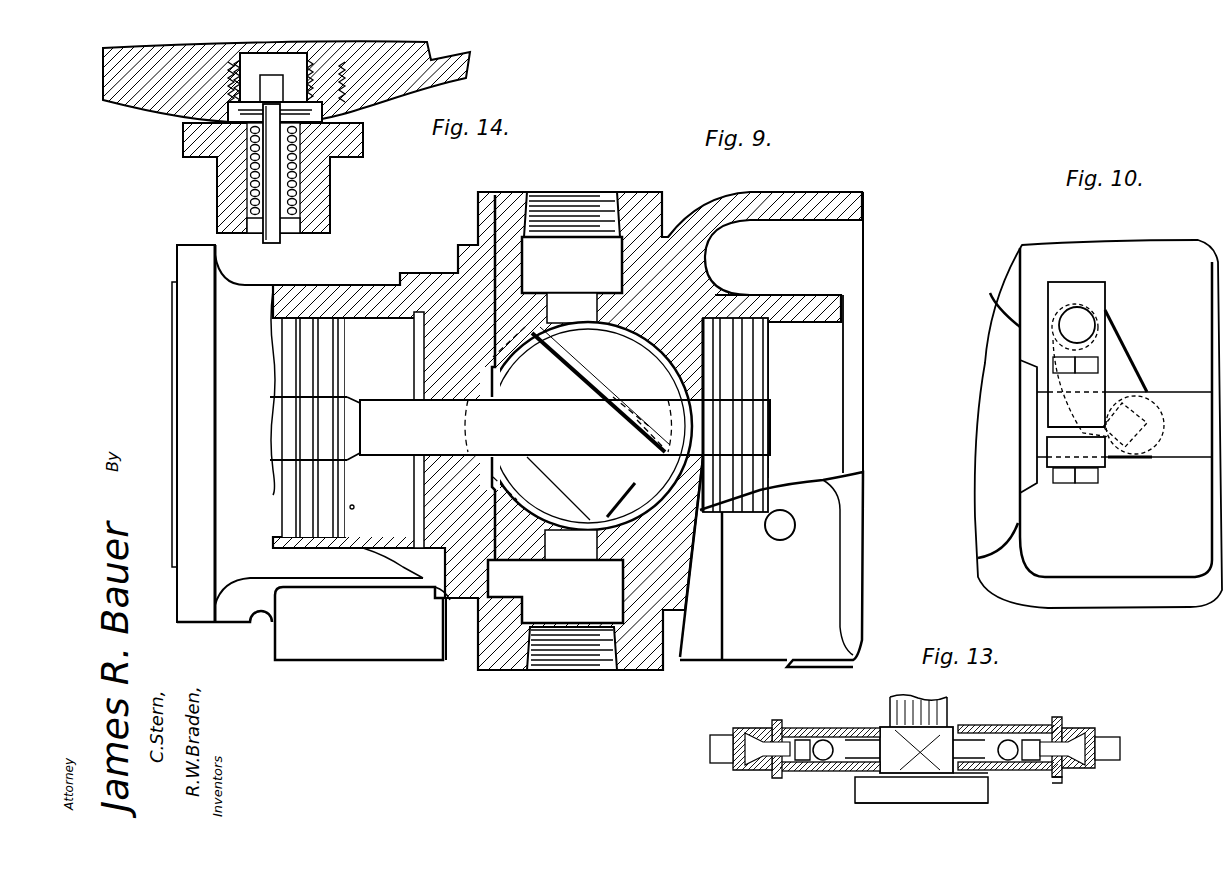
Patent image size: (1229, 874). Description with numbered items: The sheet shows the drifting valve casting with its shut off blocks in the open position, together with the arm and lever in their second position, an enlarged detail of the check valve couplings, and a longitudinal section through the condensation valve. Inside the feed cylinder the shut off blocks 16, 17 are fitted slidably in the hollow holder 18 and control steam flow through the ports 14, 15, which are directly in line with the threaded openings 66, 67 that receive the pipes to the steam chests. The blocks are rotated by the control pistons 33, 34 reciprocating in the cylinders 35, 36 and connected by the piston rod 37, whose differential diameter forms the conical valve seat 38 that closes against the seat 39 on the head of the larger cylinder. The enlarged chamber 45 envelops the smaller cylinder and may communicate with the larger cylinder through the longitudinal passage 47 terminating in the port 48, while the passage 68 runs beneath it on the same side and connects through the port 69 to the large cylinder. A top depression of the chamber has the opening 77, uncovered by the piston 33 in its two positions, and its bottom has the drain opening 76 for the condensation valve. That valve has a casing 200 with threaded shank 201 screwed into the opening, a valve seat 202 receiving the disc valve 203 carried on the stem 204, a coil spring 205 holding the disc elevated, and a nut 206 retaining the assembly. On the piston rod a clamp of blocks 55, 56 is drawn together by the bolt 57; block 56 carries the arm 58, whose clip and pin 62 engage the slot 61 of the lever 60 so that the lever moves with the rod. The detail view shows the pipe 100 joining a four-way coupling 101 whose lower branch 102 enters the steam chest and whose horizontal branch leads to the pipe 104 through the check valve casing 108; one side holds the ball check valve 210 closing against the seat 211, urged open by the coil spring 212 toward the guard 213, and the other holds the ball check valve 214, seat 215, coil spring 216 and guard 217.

In FIG. 9, the port 14 is at (582, 553).
In FIG. 9, the port 15 is at (565, 300).
In FIG. 9, the shut off block 16 is at (628, 492).
In FIG. 9, the shut off block 17 is at (555, 350).
In FIG. 9, the hollow holder 18 is at (565, 377).
In FIG. 9, the control piston 33 is at (760, 360).
In FIG. 9, the control piston 34 is at (300, 353).
In FIG. 9, the cylinder 35 is at (778, 296).
In FIG. 9, the cylinder 36 is at (345, 295).
In FIG. 10, the cylinder 36 is at (992, 352).
In FIG. 9, the piston rod 37 is at (760, 428).
In FIG. 10, the piston rod 37 is at (1178, 397).
In FIG. 9, the conical valve seat 38 is at (496, 433).
In FIG. 9, the seat 39 is at (498, 395).
In FIG. 14, the chamber 45 is at (440, 66).
In FIG. 9, the chamber 45 is at (790, 192).
In FIG. 9, the longitudinal passage 47 is at (448, 598).
In FIG. 9, the port 48 is at (348, 548).
In FIG. 10, the block 55 is at (1055, 443).
In FIG. 10, the block 56 is at (1062, 410).
In FIG. 10, the bolt 57 is at (1092, 477).
In FIG. 10, the arm 58 is at (1077, 285).
In FIG. 10, the lever 60 is at (1125, 368).
In FIG. 10, the slot 61 is at (1097, 333).
In FIG. 10, the pin 62 is at (1080, 327).
In FIG. 9, the threaded opening 66 is at (582, 672).
In FIG. 9, the threaded opening 67 is at (570, 196).
In FIG. 9, the passage 68 is at (504, 578).
In FIG. 9, the port 69 is at (354, 506).
In FIG. 14, the drain opening 76 is at (345, 80).
In FIG. 9, the opening 77 is at (782, 539).
In FIG. 13, the pipe 100 is at (928, 710).
In FIG. 13, the four-way coupling 101 is at (910, 770).
In FIG. 13, the lower branch 102 is at (866, 786).
In FIG. 13, the pipe 104 is at (1110, 758).
In FIG. 13, the check valve casing 108 is at (1050, 780).
In FIG. 14, the casing 200 is at (332, 170).
In FIG. 14, the shank 201 is at (318, 78).
In FIG. 14, the valve seat 202 is at (205, 160).
In FIG. 14, the disc valve 203 is at (300, 80).
In FIG. 14, the valve stem 204 is at (283, 240).
In FIG. 14, the coil spring 205 is at (256, 226).
In FIG. 14, the nut 206 is at (245, 100).
In FIG. 13, the ball check valve 210 is at (838, 738).
In FIG. 13, the seat 211 is at (790, 735).
In FIG. 13, the coil spring 212 is at (823, 740).
In FIG. 13, the guard 213 is at (916, 750).
In FIG. 13, the ball check valve 214 is at (1010, 748).
In FIG. 13, the seat 215 is at (1065, 728).
In FIG. 13, the coil spring 216 is at (1010, 766).
In FIG. 13, the guard 217 is at (985, 738).